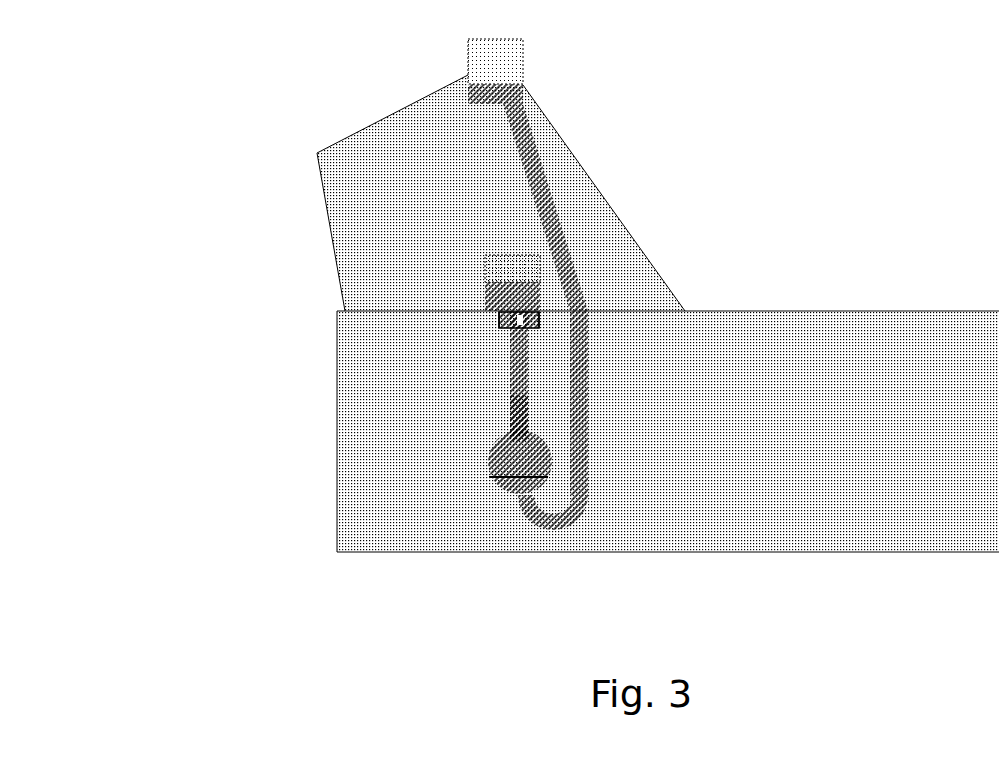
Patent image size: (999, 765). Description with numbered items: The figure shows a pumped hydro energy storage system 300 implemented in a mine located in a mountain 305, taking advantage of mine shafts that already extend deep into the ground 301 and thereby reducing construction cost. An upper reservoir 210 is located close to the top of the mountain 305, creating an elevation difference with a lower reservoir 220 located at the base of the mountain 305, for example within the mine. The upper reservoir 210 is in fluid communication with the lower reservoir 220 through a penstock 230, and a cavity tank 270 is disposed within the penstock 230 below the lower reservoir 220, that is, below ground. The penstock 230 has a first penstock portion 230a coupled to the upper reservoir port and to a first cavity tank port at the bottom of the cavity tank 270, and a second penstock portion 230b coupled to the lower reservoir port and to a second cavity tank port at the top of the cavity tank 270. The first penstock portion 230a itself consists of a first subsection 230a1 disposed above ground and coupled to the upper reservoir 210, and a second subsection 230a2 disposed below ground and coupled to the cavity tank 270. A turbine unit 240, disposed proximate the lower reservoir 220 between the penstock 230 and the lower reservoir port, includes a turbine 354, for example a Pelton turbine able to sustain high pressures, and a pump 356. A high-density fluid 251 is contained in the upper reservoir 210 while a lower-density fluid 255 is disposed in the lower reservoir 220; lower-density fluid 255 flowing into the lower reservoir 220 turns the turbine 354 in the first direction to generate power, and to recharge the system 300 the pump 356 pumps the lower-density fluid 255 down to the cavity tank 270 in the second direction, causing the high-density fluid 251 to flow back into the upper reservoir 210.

The upper reservoir 210 is at (523, 68).
The lower reservoir 220 is at (485, 282).
The penstock 230 is at (609, 361).
The first penstock portion 230a is at (699, 299).
The first first penstock subsection 230a1 is at (573, 213).
The second first penstock subsection 230a2 is at (602, 390).
The second penstock portion 230b is at (513, 380).
The turbine unit 240 is at (499, 323).
The high-density fluid 251 is at (587, 412).
The lower-density fluid 255 is at (517, 402).
The cavity tank 270 is at (487, 463).
The system 300 is at (650, 633).
The ground 301 is at (307, 383).
The mountain 305 is at (308, 175).
The turbine 354 is at (529, 328).
The pump 356 is at (503, 327).